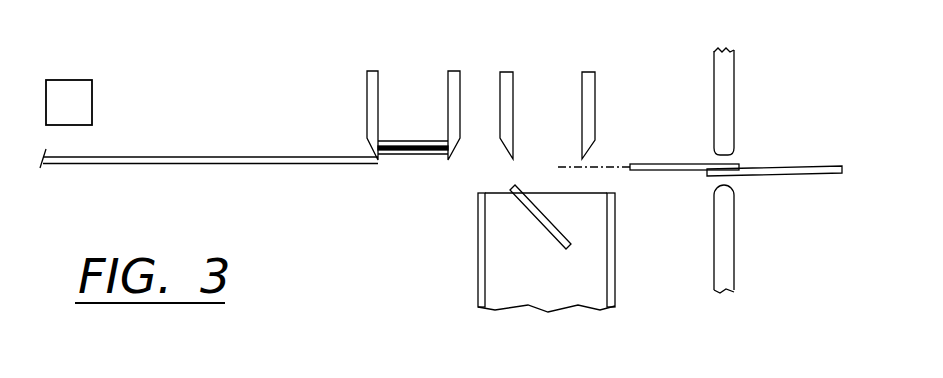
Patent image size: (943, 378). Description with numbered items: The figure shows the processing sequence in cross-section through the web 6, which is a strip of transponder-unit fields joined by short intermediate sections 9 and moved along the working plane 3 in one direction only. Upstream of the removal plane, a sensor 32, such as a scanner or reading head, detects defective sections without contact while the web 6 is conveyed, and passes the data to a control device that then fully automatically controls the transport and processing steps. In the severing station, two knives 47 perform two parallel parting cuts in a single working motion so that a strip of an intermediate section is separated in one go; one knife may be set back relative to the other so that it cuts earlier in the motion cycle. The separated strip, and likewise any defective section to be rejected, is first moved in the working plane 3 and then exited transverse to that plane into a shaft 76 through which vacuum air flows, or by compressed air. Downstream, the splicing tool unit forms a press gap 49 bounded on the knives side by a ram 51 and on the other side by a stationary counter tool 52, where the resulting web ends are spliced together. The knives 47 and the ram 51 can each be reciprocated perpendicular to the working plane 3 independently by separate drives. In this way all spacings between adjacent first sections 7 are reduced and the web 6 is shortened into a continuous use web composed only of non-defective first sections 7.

The sensor 32 is at (68, 82).
The web 6 is at (254, 132).
The knife 47 is at (447, 130).
The web/working plane 3 is at (570, 167).
The ram 51 is at (715, 83).
The press gap 49 is at (718, 154).
The intermediate section 9 is at (705, 174).
The first section 7 is at (793, 167).
The counter tool 52 is at (720, 251).
The shaft 76 is at (485, 285).